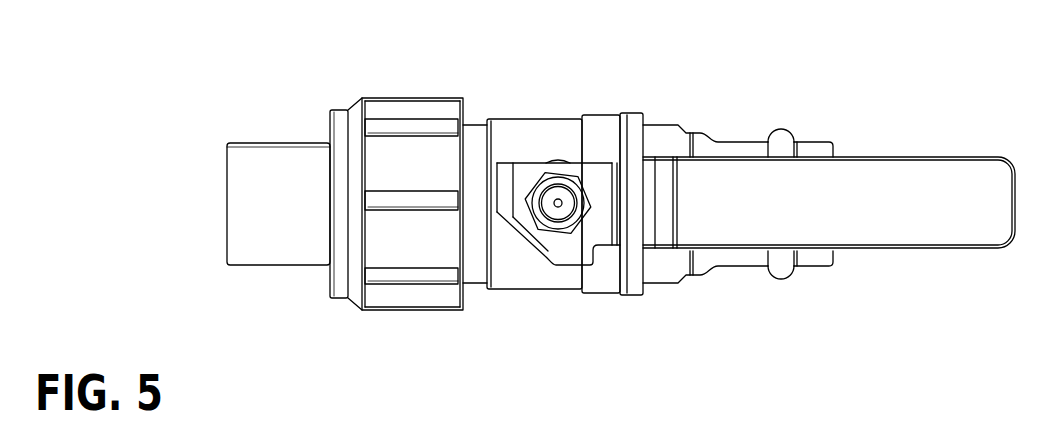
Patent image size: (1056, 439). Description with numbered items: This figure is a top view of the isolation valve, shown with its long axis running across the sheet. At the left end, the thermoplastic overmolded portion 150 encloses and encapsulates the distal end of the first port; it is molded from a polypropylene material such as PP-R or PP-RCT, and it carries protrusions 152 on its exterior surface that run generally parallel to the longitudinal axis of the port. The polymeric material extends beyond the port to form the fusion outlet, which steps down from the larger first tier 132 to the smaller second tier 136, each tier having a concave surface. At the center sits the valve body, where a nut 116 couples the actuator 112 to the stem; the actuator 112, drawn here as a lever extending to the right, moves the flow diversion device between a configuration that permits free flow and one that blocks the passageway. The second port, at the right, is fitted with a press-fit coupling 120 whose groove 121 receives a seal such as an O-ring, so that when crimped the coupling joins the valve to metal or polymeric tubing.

The actuator 112 is at (935, 190).
The nut 116 is at (559, 178).
The press-fit coupling 120 is at (815, 147).
The groove 121 is at (777, 145).
The first tier 132 is at (338, 122).
The second tier 136 is at (270, 173).
The overmolded portion 150 is at (423, 162).
The protrusions 152 is at (398, 127).